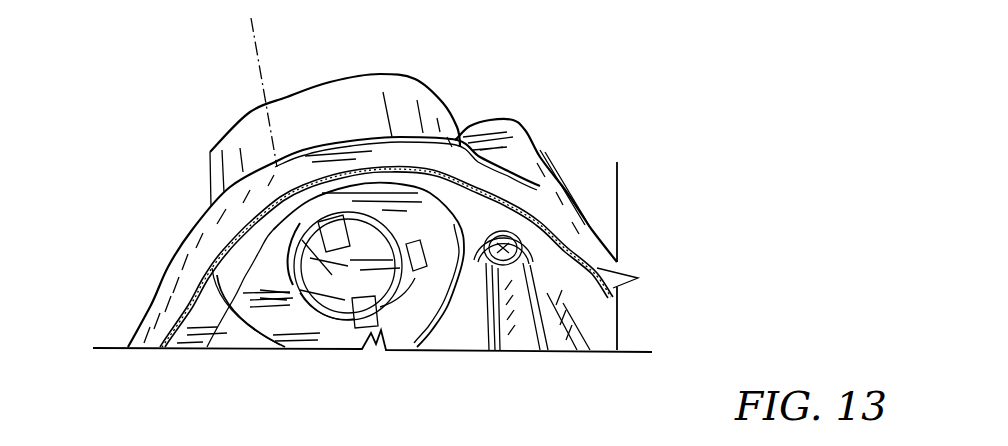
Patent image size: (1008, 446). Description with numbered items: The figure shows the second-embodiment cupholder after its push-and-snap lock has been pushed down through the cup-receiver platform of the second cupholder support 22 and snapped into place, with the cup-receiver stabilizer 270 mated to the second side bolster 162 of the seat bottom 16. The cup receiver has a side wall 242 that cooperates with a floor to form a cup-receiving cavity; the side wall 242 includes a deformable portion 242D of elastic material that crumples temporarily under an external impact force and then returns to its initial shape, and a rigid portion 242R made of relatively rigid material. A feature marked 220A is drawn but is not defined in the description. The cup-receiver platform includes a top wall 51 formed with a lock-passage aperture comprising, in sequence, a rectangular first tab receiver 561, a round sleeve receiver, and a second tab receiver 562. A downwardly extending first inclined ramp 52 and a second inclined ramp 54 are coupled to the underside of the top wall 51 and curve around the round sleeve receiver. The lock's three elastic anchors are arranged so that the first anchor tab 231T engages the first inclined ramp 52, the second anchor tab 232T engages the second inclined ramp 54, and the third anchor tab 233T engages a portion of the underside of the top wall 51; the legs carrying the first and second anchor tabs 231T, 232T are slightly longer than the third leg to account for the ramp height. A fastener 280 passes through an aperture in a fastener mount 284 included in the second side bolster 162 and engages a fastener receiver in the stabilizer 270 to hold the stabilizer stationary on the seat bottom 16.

The seat bottom 16 is at (130, 313).
The second side bolster 162 is at (150, 268).
The side wall 242 is at (365, 88).
The deformable portion 242D is at (273, 98).
The rigid portion 242R is at (460, 133).
The axis 220A is at (269, 52).
The cup-receiver stabilizer 270 is at (554, 110).
The second cupholder support 22 is at (386, 182).
The first tab receiver 561 is at (432, 214).
The second inclined ramp 54 is at (337, 233).
The second tab receiver 562 is at (263, 269).
The first inclined ramp 52 is at (385, 305).
The second anchor tab 232T is at (329, 232).
The first anchor tab 231T is at (362, 316).
The third anchor tab 233T is at (427, 267).
The top wall 51 is at (512, 197).
The fastener mount 284 is at (450, 237).
The fastener 280 is at (583, 352).